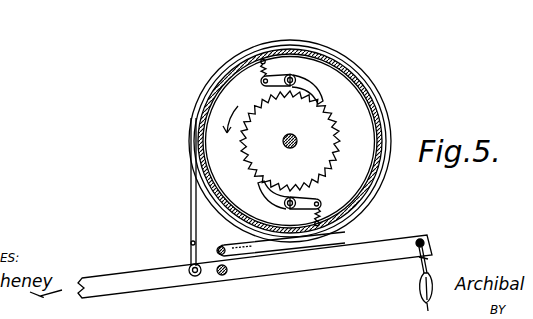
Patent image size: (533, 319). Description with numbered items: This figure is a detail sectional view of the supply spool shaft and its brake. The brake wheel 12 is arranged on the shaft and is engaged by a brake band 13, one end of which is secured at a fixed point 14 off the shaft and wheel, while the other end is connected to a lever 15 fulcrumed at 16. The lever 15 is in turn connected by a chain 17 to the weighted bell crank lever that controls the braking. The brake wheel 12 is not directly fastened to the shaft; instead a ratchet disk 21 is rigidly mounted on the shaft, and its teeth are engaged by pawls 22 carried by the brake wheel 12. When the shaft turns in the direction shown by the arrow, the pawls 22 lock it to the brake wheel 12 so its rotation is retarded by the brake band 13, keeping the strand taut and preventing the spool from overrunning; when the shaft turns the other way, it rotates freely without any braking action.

The brake wheel 12 is at (187, 137).
The brake band 13 is at (191, 198).
The fixed point 14 is at (226, 247).
The lever 15 is at (291, 262).
The fulcrum 16 is at (221, 275).
The chain 17 is at (418, 272).
The ratchet disk 21 is at (284, 127).
The pawls 22 is at (308, 85).